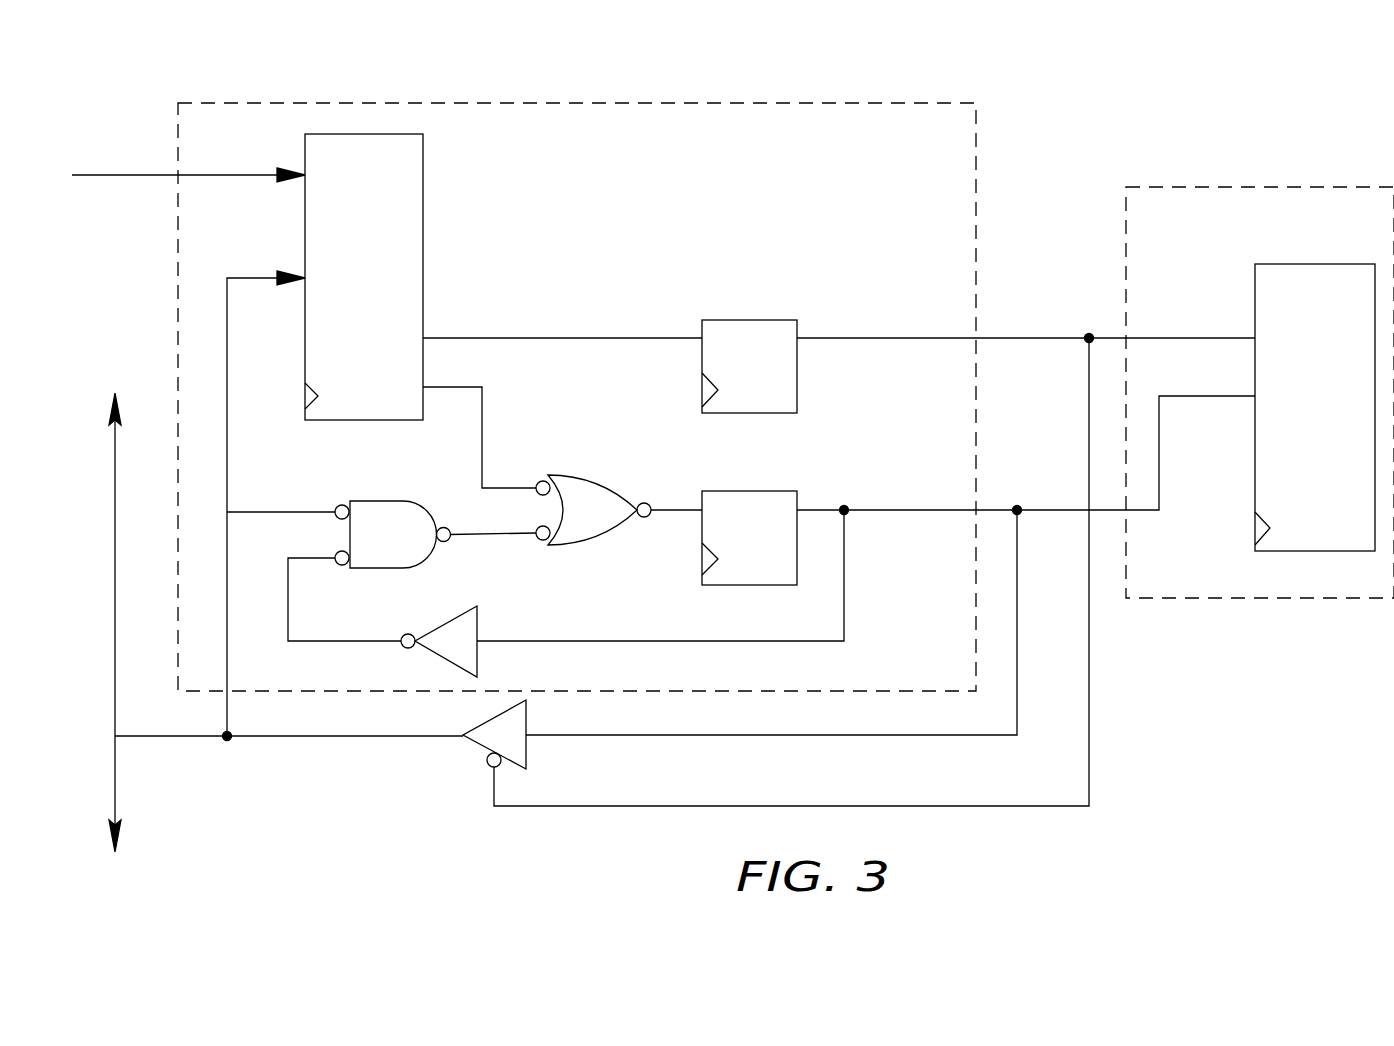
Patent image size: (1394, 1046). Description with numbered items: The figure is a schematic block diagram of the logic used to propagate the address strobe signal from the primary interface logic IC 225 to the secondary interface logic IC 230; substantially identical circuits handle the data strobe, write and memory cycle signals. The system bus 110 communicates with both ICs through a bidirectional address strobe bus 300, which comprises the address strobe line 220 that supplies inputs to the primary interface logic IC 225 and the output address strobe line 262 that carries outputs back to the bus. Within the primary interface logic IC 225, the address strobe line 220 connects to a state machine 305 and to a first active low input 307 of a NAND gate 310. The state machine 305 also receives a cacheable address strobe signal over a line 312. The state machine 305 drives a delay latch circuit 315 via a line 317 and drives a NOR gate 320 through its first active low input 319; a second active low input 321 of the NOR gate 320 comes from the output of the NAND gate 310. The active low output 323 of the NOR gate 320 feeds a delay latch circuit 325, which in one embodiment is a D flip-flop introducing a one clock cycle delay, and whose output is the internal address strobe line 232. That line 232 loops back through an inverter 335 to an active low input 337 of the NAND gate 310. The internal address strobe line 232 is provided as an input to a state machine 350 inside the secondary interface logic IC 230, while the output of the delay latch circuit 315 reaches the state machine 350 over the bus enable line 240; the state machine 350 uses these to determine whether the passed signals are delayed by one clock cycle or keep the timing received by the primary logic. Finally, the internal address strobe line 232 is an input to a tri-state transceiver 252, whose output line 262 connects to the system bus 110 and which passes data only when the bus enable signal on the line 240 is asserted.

The system bus 110 is at (113, 615).
The address strobe line 220 is at (227, 648).
The primary interface logic IC 225 is at (893, 103).
The secondary interface logic IC 230 is at (1182, 187).
The internal address strobe line 232 is at (1073, 505).
The bus enable line 240 is at (828, 338).
The tri-state transceiver 252 is at (486, 713).
The output address strobe line 262 is at (310, 738).
The bidirectional address strobe bus 300 is at (150, 738).
The state machine 305 is at (423, 177).
The first active low input 307 is at (268, 512).
The NAND gate 310 is at (377, 501).
The line 312 is at (193, 175).
The delay latch circuit 315 is at (725, 320).
The line 317 is at (500, 338).
The first active low input 319 is at (465, 387).
The NOR gate 320 is at (575, 477).
The second active low input 321 is at (478, 534).
The active low output 323 is at (667, 507).
The delay latch circuit 325 is at (735, 585).
The inverter 335 is at (435, 622).
The active low input 337 is at (318, 558).
The state machine 350 is at (1298, 264).